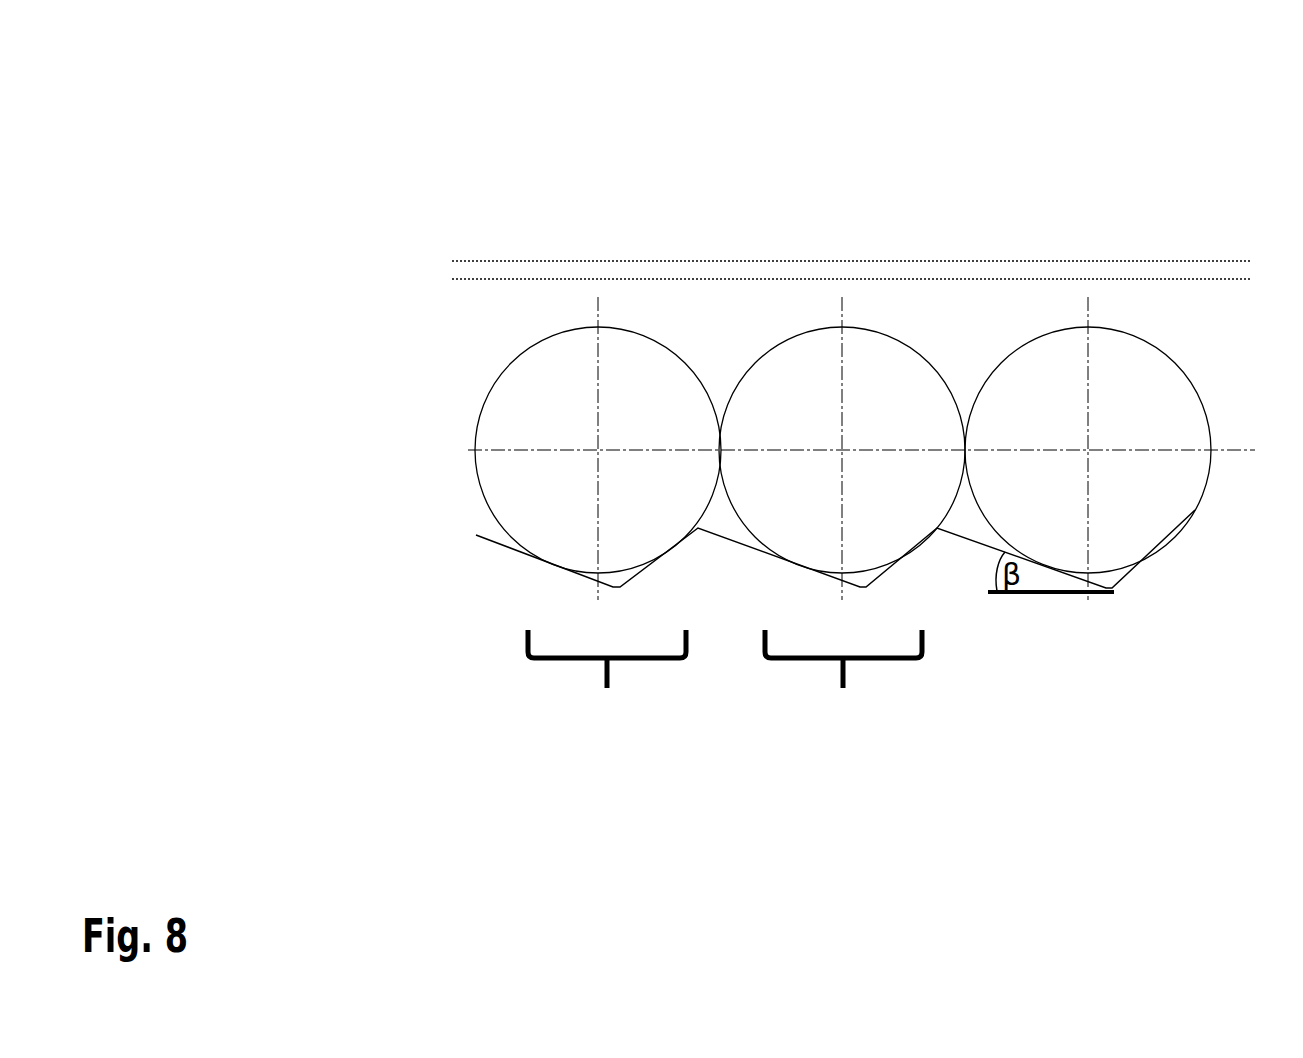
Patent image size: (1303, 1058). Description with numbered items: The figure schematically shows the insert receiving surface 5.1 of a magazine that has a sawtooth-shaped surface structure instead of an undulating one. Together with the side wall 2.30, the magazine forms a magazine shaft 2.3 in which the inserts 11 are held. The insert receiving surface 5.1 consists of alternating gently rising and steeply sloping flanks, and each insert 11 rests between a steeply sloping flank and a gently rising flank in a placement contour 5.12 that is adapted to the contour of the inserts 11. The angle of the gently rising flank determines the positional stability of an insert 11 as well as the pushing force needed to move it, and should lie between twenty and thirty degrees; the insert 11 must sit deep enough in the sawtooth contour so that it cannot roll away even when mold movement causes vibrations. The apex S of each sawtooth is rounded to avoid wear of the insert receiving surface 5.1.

The side wall 2.30 is at (555, 258).
The inserts 11 is at (1048, 330).
The magazine shaft 2.3 is at (359, 368).
The insert receiving surface 5.1 is at (715, 565).
The placement contour 5.12 is at (725, 684).
The apex S is at (937, 532).